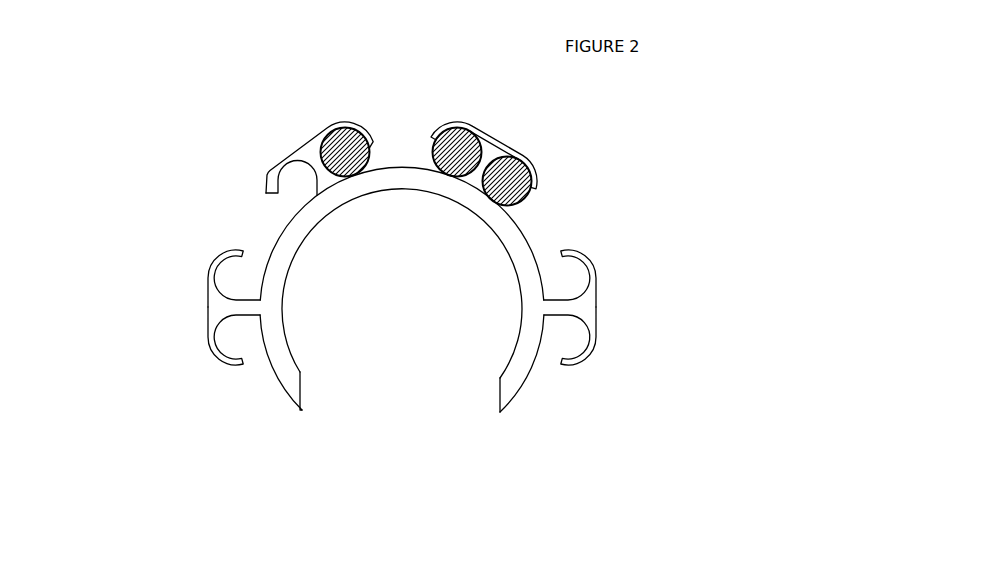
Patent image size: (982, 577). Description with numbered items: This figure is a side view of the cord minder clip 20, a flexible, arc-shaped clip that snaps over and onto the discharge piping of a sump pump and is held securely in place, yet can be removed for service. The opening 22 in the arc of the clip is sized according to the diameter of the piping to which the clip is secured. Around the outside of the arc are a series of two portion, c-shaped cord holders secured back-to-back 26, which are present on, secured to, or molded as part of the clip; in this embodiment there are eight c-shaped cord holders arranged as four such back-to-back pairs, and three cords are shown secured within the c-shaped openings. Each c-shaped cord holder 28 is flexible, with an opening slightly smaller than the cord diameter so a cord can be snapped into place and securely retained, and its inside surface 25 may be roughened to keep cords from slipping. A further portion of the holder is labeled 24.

The cord minder clip 20 is at (169, 193).
The opening 22 is at (396, 432).
The right side clip 24 is at (587, 256).
The inside surface 25 is at (215, 342).
The two portion c-shaped cord holders secured back-to-back 26 is at (185, 314).
The c-shaped cord holder 28 is at (553, 378).